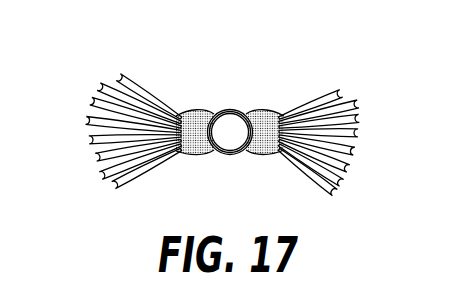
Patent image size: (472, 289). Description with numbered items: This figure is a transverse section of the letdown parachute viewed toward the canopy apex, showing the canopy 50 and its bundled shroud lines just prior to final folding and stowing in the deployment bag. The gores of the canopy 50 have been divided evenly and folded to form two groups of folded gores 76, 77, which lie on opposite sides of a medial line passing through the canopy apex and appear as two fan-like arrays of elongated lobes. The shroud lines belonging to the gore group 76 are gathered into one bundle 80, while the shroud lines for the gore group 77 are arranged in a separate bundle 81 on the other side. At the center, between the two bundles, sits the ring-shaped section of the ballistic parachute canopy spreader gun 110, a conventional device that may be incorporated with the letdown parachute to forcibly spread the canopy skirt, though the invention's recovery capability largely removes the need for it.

The canopy 50 is at (116, 68).
The group of folded gores 76 is at (84, 100).
The group of folded gores 77 is at (362, 103).
The shroud line bundle 80 is at (191, 114).
The shroud line bundle 81 is at (262, 114).
The ballistic parachute canopy spreader gun 110 is at (214, 157).